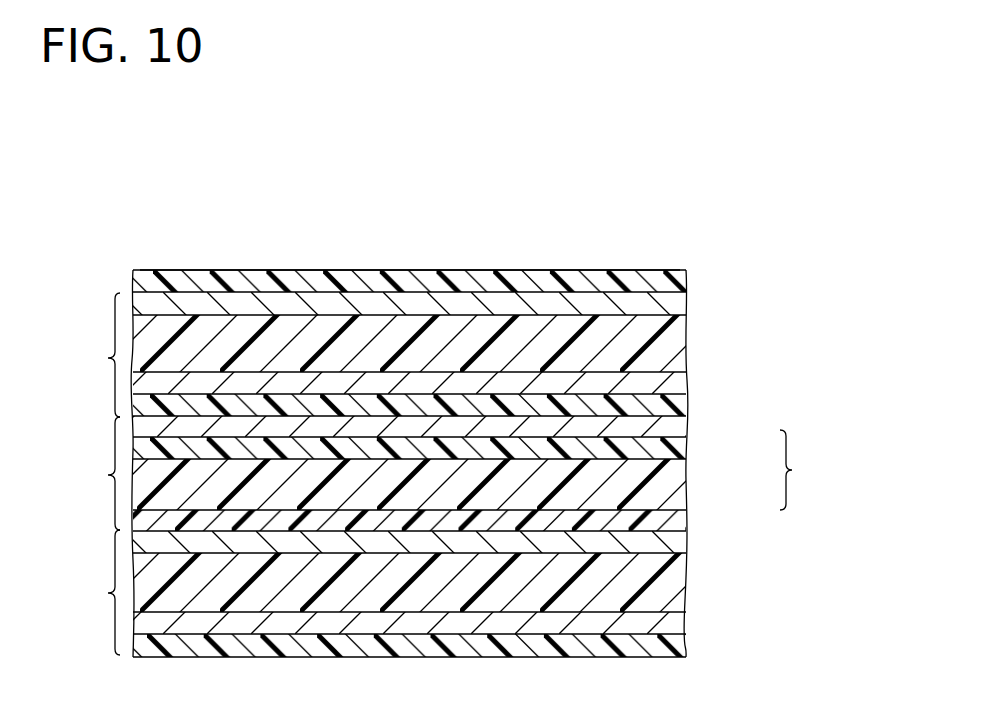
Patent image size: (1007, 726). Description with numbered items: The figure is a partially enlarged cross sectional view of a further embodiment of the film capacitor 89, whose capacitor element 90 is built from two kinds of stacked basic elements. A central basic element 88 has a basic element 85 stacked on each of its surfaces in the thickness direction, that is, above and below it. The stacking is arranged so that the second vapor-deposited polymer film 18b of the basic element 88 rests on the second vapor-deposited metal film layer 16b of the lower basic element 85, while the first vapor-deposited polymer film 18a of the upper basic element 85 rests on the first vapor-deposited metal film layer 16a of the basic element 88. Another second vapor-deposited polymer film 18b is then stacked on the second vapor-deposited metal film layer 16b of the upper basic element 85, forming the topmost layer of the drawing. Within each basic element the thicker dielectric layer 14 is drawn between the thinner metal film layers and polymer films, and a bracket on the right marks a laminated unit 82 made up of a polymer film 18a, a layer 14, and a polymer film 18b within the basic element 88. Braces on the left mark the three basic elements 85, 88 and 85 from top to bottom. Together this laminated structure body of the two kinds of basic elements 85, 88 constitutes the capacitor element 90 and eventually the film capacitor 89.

The dielectric layer 14 is at (640, 335).
The first vapor-deposited metal film layer 16a is at (665, 385).
The second vapor-deposited metal film layer 16b is at (622, 305).
The first vapor-deposited polymer film 18a is at (668, 407).
The second vapor-deposited polymer film 18b is at (515, 280).
The laminated unit 82 is at (801, 470).
The basic element 85 is at (101, 474).
The basic element 88 is at (101, 473).
The film capacitor 89 is at (449, 216).
The capacitor element 90 is at (287, 262).